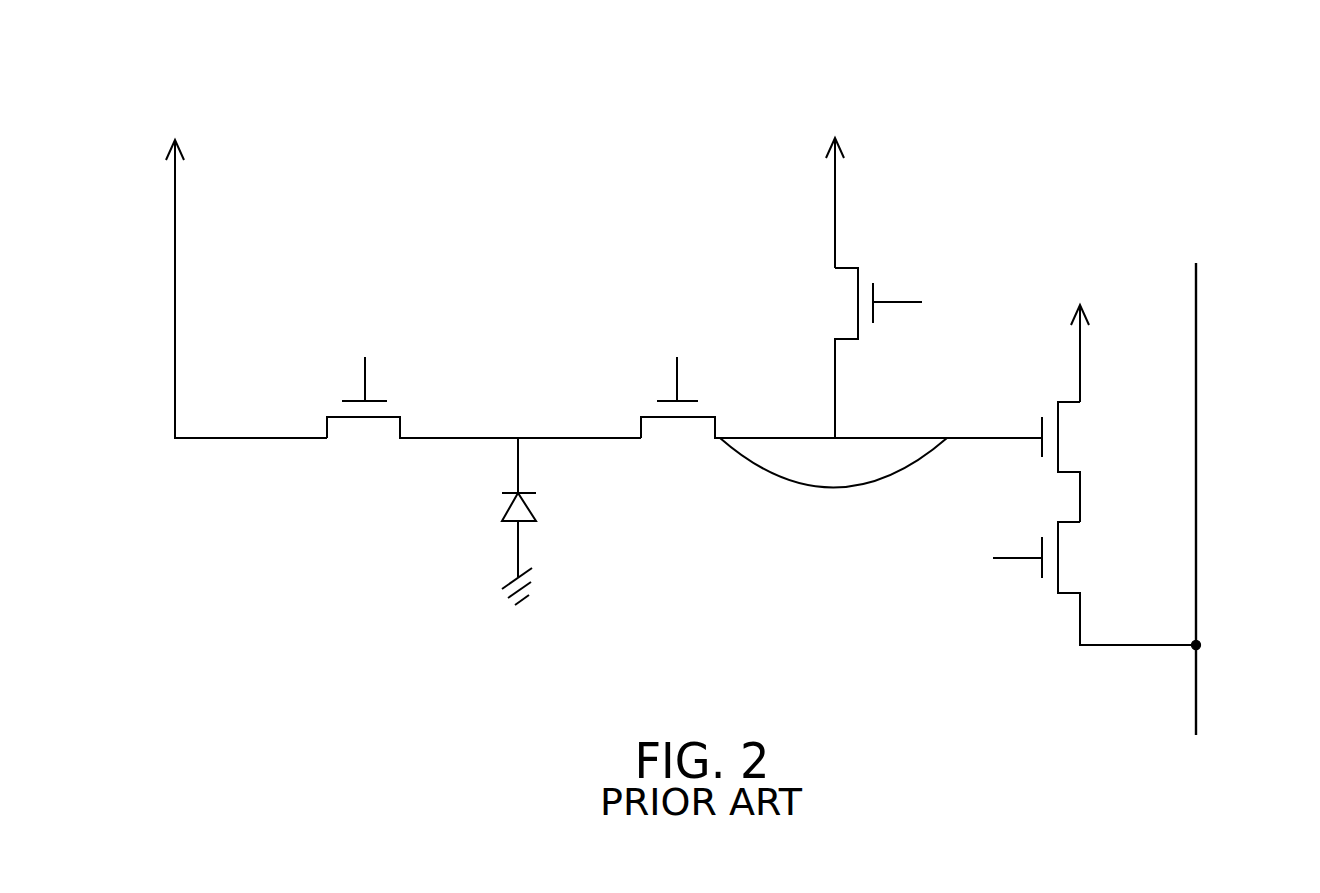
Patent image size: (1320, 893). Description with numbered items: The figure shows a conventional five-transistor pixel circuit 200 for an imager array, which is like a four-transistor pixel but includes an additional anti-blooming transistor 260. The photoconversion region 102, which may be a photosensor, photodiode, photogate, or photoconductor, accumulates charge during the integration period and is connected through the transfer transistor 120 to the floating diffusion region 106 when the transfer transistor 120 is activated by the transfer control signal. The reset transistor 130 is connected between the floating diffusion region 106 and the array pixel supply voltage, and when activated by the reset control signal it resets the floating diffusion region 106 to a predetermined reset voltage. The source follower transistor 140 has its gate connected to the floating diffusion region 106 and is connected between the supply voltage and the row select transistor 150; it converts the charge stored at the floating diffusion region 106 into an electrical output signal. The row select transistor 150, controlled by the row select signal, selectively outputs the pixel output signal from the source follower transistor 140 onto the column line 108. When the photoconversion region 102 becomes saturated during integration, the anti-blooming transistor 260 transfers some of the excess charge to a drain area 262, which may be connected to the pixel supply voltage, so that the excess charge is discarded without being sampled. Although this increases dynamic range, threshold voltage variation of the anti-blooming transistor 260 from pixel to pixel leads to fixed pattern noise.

The pixel circuit 200 is at (1135, 118).
The drain area 262 is at (260, 440).
The anti-blooming transistor 260 is at (365, 418).
The photoconversion region 102 is at (508, 527).
The transfer transistor 120 is at (676, 418).
The floating diffusion region 106 is at (822, 467).
The reset transistor 130 is at (856, 298).
The source follower transistor 140 is at (1060, 447).
The row select transistor 150 is at (1060, 557).
The column line 108 is at (1197, 418).